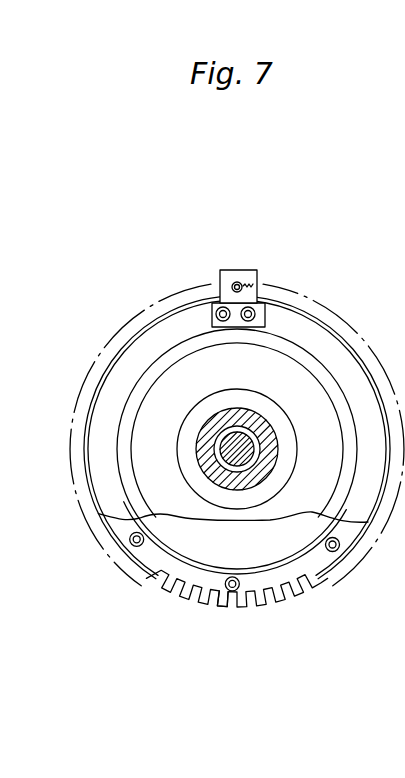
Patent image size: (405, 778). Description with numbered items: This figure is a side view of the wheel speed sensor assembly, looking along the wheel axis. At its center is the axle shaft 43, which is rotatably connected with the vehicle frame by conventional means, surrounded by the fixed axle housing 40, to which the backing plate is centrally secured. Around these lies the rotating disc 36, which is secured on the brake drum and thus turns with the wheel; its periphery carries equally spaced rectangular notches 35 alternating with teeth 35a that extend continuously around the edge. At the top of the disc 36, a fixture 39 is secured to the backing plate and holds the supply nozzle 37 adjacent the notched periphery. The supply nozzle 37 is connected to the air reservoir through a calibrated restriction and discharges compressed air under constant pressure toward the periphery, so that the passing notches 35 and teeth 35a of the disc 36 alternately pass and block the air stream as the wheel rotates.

The rectangular notches 35 is at (163, 589).
The teeth 35a is at (226, 609).
The rotating disc 36 is at (321, 579).
The supply nozzle 37 is at (243, 284).
The fixture 39 is at (235, 278).
The fixed axle housing 40 is at (264, 422).
The axle shaft 43 is at (252, 442).